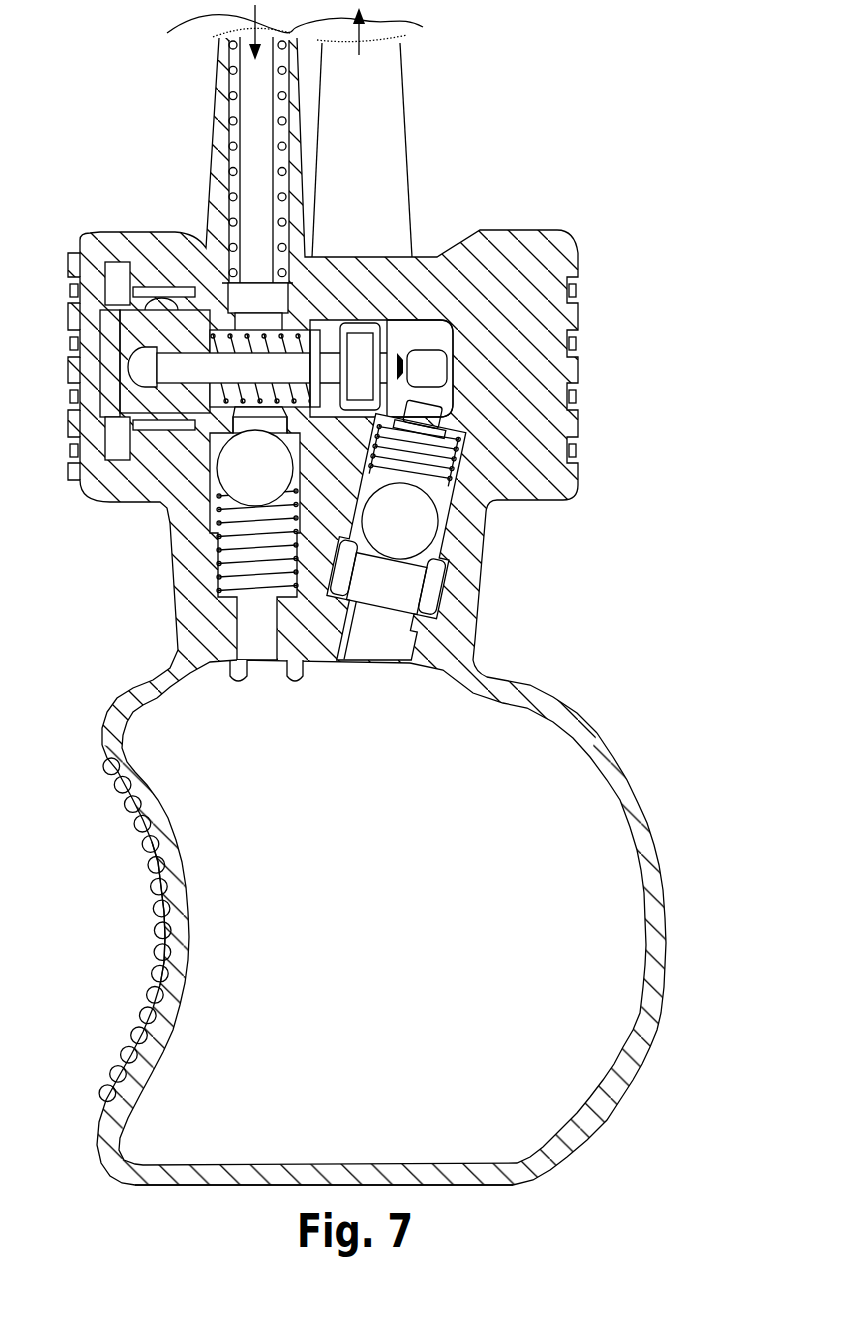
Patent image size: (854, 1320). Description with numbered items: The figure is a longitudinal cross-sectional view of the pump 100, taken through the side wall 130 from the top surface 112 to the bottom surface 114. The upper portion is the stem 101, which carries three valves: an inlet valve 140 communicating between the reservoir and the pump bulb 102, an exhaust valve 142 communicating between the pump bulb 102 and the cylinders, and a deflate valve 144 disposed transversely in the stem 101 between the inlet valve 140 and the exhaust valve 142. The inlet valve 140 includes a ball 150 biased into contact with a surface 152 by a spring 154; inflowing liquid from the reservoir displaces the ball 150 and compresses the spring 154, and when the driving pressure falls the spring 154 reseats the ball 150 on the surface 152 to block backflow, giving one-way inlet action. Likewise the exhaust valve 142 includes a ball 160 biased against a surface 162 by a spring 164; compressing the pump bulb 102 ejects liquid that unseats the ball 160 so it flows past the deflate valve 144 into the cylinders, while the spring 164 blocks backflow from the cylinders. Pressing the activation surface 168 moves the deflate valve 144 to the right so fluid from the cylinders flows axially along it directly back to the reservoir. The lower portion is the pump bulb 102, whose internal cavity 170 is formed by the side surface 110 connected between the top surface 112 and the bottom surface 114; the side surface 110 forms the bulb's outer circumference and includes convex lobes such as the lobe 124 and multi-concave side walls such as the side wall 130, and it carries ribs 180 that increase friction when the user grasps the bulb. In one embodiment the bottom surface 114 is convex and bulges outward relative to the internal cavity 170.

The pump 100 is at (92, 125).
The stem 101 is at (63, 236).
The pump bulb 102 is at (94, 800).
The side surface 110 is at (130, 875).
The top surface 112 is at (503, 680).
The bottom surface 114 is at (218, 1177).
The lobe 124 is at (660, 945).
The side wall 130 is at (175, 950).
The inlet valve 140 is at (210, 533).
The exhaust valve 142 is at (416, 538).
The deflate valve 144 is at (220, 326).
The ball 150 is at (240, 486).
The surface 152 is at (233, 480).
The spring 154 is at (223, 581).
The ball 160 is at (430, 535).
The surface 162 is at (345, 552).
The spring 164 is at (368, 457).
The activation surface 168 is at (68, 372).
The internal cavity 170 is at (360, 924).
The ribs 180 is at (143, 1042).